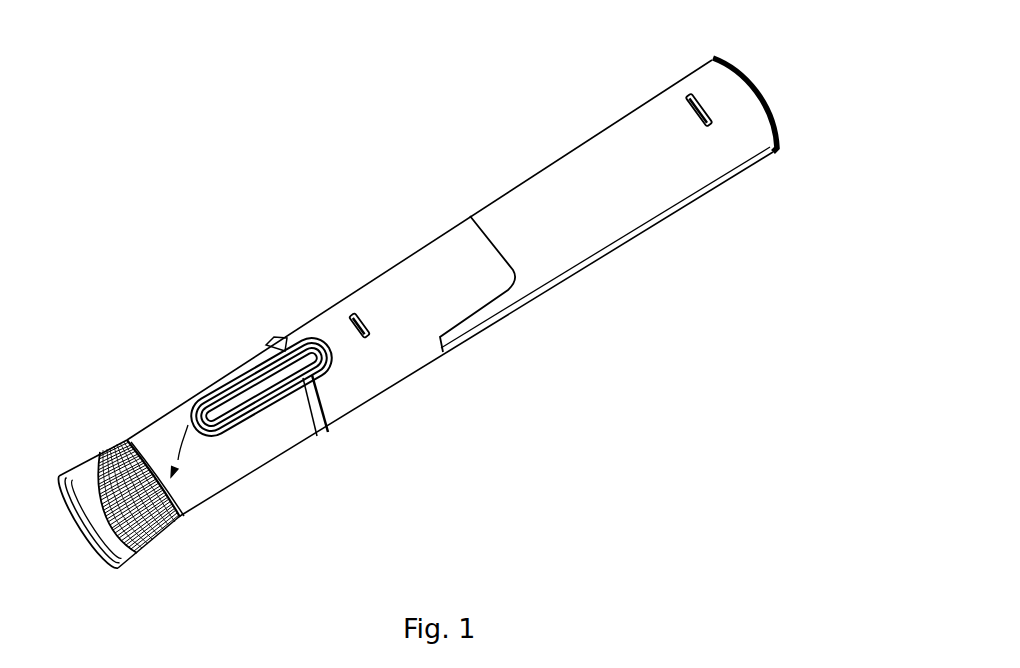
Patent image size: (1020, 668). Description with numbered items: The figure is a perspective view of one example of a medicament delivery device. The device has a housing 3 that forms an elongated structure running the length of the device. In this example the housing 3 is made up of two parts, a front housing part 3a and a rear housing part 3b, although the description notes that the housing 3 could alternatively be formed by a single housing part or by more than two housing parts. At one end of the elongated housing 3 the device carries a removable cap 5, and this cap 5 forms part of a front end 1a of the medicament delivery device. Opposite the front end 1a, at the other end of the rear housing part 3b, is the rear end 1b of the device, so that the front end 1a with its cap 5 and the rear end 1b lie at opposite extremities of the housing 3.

The front end 1a is at (128, 424).
The rear end 1b is at (712, 58).
The housing 3 is at (428, 228).
The front housing part 3a is at (209, 501).
The rear housing part 3b is at (572, 277).
The removable cap 5 is at (97, 550).